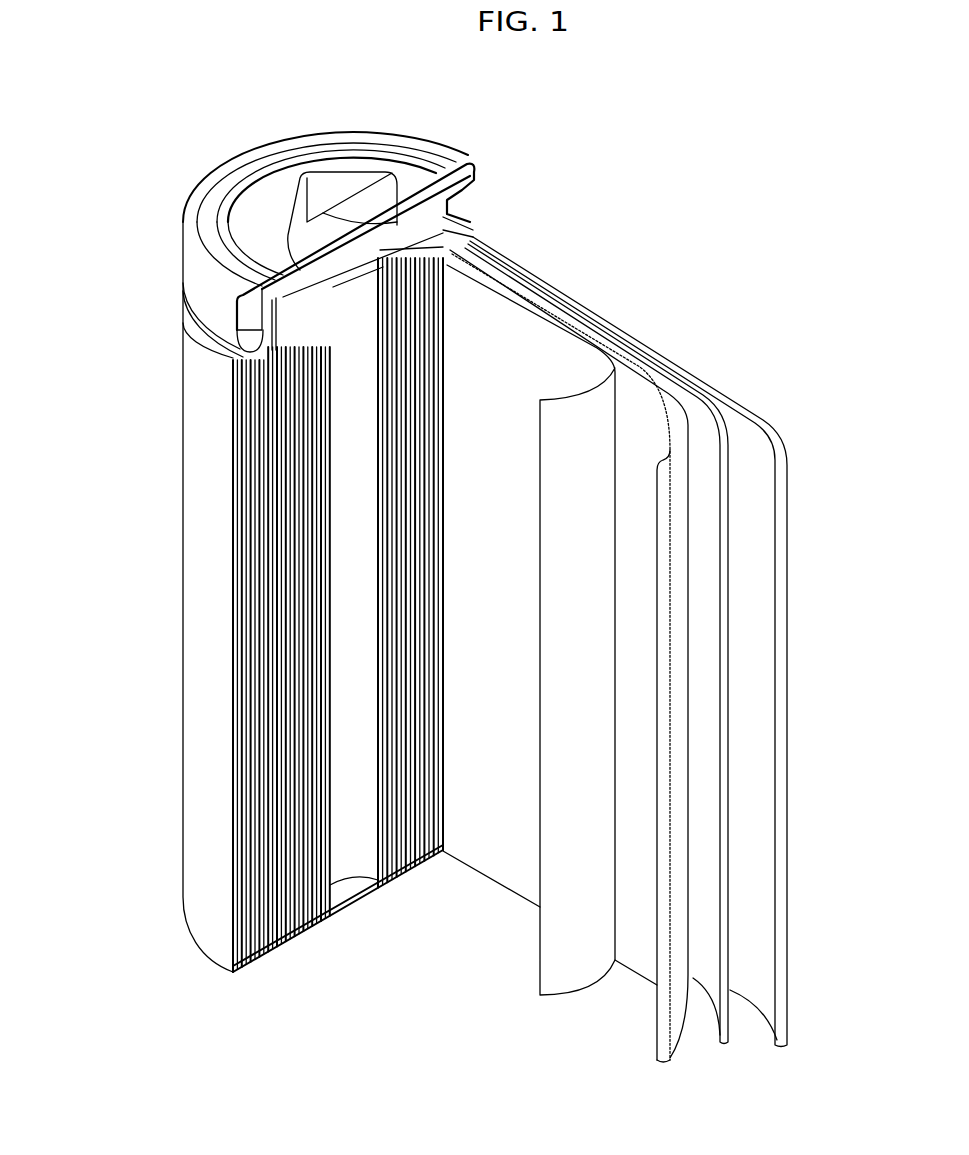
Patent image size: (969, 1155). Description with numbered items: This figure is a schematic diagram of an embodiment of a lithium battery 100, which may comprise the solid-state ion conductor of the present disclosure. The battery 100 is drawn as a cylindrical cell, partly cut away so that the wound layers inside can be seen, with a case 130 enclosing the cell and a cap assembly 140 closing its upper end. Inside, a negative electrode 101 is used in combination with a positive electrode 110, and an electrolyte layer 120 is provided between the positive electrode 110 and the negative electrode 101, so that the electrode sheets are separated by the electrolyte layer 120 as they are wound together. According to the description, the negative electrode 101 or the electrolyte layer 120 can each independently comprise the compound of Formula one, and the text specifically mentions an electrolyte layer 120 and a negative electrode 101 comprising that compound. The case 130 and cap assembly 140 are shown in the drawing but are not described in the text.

The battery 100 is at (680, 158).
The negative electrode 101 is at (773, 430).
The positive electrode 110 is at (638, 377).
The electrolyte layer 120 is at (547, 317).
The battery case (can) 130 is at (197, 603).
The cap assembly 140 is at (309, 155).